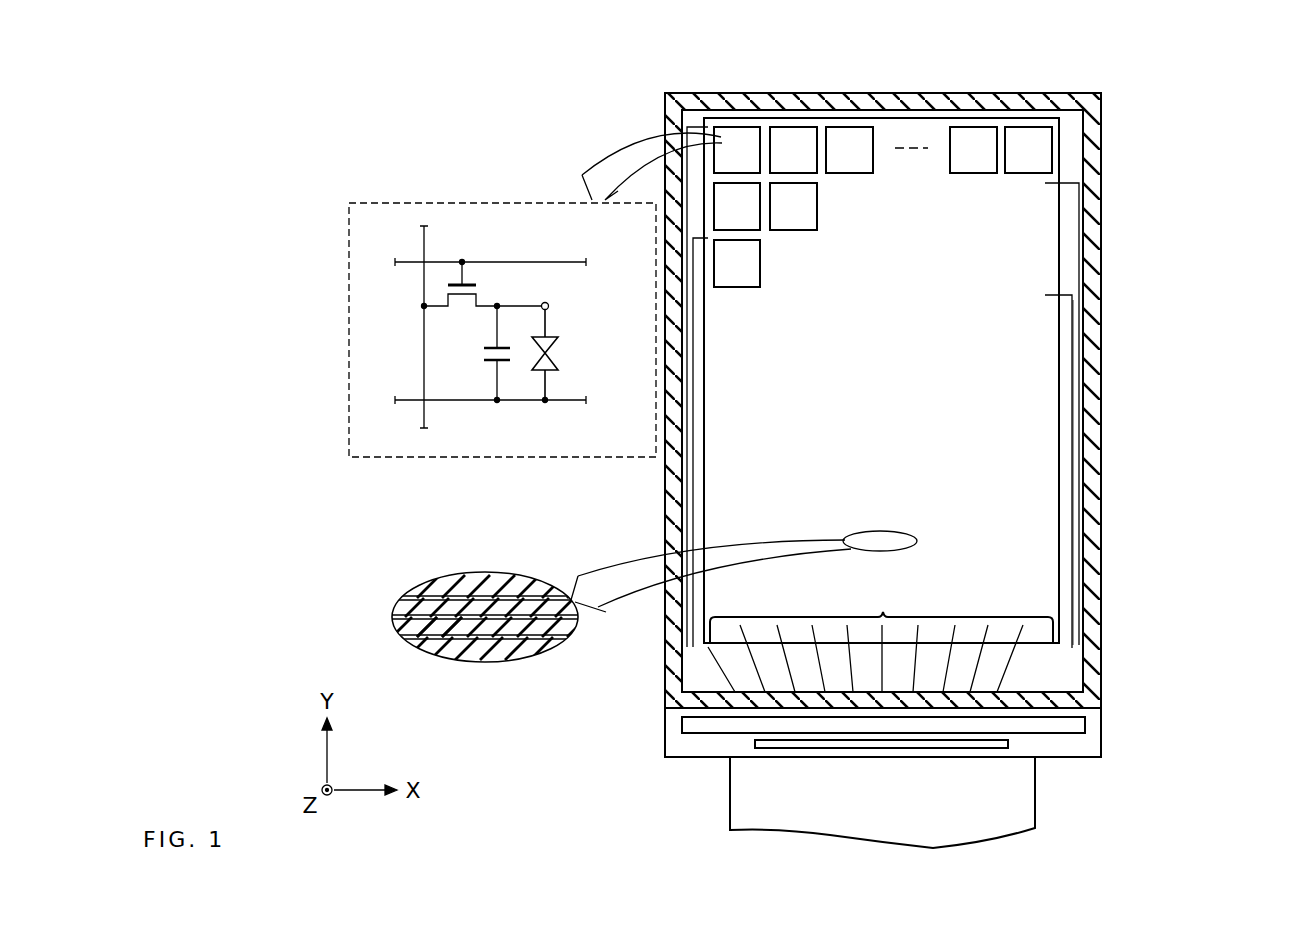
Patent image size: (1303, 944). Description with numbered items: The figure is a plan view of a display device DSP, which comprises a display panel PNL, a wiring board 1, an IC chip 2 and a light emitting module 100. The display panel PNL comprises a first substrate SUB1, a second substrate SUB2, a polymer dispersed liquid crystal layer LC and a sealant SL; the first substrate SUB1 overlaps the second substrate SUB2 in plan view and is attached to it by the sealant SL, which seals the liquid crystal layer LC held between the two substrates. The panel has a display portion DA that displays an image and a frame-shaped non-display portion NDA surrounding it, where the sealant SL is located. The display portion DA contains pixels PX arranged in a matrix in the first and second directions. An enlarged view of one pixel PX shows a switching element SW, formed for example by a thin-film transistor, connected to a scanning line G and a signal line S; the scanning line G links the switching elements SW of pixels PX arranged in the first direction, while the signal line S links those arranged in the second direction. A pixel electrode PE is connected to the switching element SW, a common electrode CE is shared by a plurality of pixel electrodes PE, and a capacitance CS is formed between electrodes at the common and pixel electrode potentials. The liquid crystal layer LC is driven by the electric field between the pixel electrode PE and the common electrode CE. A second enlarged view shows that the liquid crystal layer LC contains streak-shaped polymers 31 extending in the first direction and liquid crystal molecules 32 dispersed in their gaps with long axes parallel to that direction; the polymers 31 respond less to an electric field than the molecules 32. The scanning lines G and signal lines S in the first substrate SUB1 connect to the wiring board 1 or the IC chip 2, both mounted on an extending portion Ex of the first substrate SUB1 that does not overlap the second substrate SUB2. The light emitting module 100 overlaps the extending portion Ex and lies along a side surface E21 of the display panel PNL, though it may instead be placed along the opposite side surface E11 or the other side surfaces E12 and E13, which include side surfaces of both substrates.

The display panel PNL is at (1102, 88).
The display device DSP is at (1177, 137).
The side surface E11 is at (925, 91).
The side surface E12 is at (662, 481).
The side surface E13 is at (1106, 397).
The side surface E21 is at (1010, 714).
The non-display portion NDA is at (1102, 517).
The display portion DA is at (1064, 467).
The pixel PX is at (842, 126).
The scanning line G is at (1074, 338).
The signal line S is at (396, 339).
The sealant SL is at (1096, 590).
The liquid crystal layer LC is at (1079, 660).
The first substrate SUB1 is at (1096, 732).
The second substrate SUB2 is at (1096, 688).
The polymers 31 is at (397, 632).
The liquid crystal molecules 32 is at (483, 636).
The light emitting module 100 is at (872, 738).
The IC chip 2 is at (822, 750).
The wiring board 1 is at (730, 824).
The extending portion Ex is at (664, 742).
The switching element SW is at (488, 297).
The pixel electrode PE is at (552, 306).
The capacitance CS is at (482, 358).
The common electrode CE is at (567, 403).